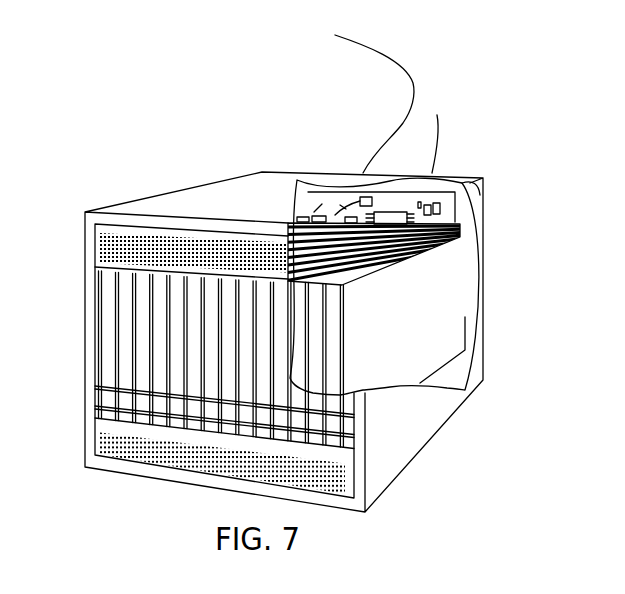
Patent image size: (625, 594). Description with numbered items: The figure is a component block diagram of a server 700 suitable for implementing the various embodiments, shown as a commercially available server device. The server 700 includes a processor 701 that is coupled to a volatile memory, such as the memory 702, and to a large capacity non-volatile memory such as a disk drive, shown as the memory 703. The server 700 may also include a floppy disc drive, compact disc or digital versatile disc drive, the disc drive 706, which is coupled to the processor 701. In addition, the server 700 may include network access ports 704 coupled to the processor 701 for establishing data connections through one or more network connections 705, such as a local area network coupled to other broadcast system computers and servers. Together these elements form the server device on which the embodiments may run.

The server 700 is at (208, 183).
The processor 701 is at (392, 221).
The memory 702 is at (445, 228).
The memory 703 is at (143, 318).
The network access ports 704 is at (307, 222).
The network connections 705 is at (415, 88).
The disc drive 706 is at (125, 340).